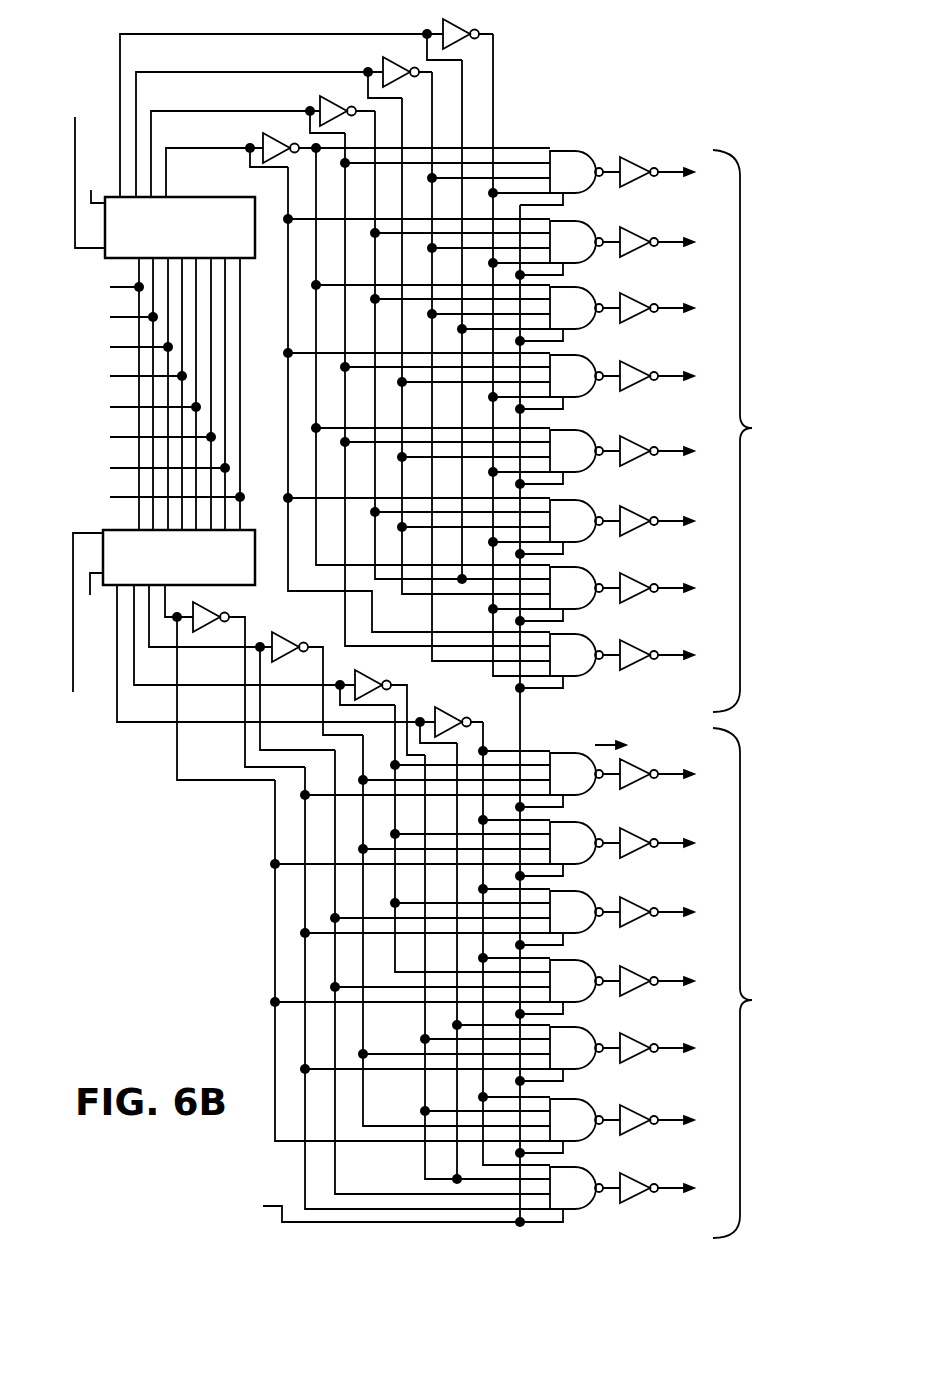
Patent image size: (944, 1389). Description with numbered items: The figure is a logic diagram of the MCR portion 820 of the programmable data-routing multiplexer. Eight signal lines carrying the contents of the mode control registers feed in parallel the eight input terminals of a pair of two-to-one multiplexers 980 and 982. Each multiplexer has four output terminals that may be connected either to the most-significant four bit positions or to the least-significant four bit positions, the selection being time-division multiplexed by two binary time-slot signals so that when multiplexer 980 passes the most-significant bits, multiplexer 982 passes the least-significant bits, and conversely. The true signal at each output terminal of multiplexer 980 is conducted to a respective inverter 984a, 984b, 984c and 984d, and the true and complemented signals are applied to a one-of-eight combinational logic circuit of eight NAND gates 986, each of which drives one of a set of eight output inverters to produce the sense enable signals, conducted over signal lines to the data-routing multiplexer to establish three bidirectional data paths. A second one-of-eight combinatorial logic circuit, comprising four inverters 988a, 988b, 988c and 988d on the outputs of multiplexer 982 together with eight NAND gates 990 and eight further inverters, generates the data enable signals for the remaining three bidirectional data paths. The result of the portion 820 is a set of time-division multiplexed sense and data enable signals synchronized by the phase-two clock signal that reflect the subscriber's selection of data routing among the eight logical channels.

The MCR1-3 portion 820 is at (718, 70).
The 2:1 multiplexer 980 is at (215, 251).
The 2:1 multiplexer 982 is at (202, 582).
The inverter 984a is at (262, 134).
The inverter 984b is at (318, 97).
The inverter 984c is at (381, 58).
The inverter 984d is at (441, 21).
The NAND gates 986 is at (576, 634).
The inverter 988a is at (214, 606).
The inverter 988b is at (270, 634).
The inverter 988c is at (360, 664).
The inverter 988d is at (455, 703).
The NAND gates 990 is at (576, 1167).